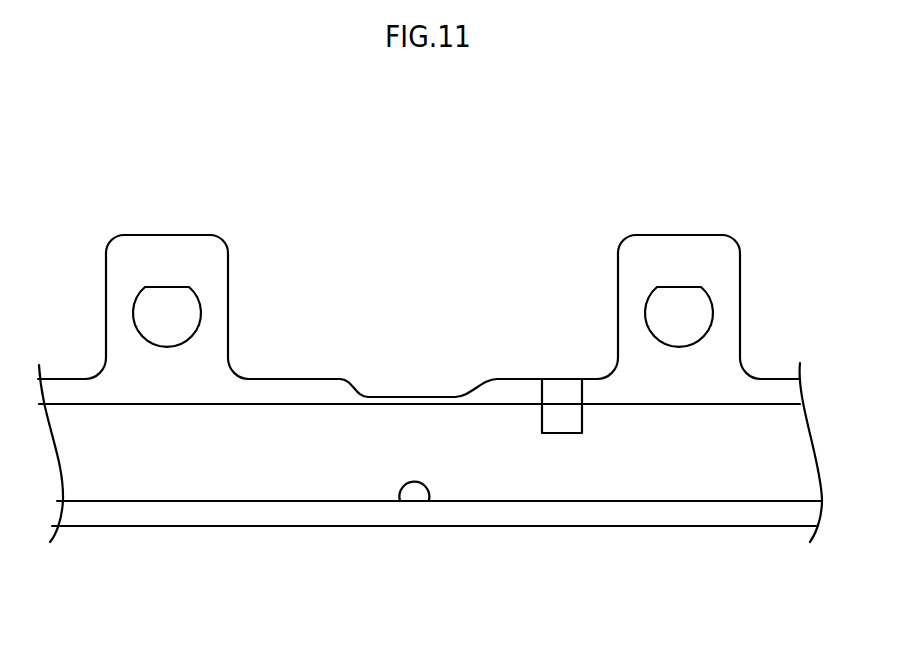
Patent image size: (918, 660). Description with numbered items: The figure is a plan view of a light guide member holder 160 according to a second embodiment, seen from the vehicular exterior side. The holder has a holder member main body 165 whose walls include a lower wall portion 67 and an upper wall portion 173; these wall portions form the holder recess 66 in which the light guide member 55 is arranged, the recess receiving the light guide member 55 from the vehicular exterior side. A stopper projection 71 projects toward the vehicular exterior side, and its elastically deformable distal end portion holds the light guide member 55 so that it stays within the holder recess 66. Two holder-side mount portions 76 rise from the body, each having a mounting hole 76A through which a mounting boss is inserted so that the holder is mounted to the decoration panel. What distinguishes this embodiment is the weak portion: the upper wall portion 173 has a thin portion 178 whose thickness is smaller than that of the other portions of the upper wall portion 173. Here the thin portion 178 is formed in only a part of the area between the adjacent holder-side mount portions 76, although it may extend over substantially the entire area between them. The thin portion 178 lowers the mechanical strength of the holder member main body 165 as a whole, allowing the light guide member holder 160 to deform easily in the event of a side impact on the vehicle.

The light guide member holder 160 is at (773, 358).
The holder member main body 165 is at (238, 594).
The upper wall portion 173 is at (280, 390).
The light guide member 55 is at (329, 475).
The lower wall portion 67 is at (178, 512).
The thin portion 178 is at (407, 398).
The stopper projection 71 is at (560, 432).
The holder recess 66 is at (429, 500).
The holder-side mount portion 76 is at (185, 258).
The mounting hole 76A is at (137, 326).